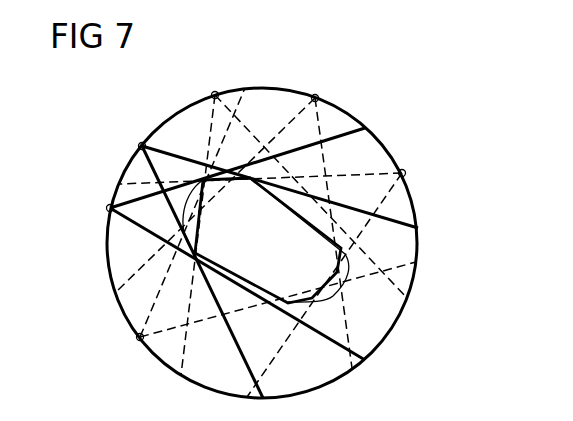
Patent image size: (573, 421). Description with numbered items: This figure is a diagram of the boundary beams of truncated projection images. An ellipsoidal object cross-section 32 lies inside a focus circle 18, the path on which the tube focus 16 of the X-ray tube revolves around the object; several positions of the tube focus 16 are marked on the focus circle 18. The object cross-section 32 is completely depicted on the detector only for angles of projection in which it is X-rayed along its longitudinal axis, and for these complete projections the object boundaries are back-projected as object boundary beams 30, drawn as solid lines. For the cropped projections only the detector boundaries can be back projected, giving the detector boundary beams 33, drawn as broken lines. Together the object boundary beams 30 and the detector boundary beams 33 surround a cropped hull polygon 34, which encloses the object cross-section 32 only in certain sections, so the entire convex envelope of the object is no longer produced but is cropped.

The tube focus 16 is at (215, 92).
The focus circle 18 is at (352, 113).
The object boundary beams 30 is at (160, 152).
The ellipsoidal object cross-section 32 is at (330, 297).
The detector boundary beams 33 is at (305, 106).
The cropped hull polygon 34 is at (208, 196).